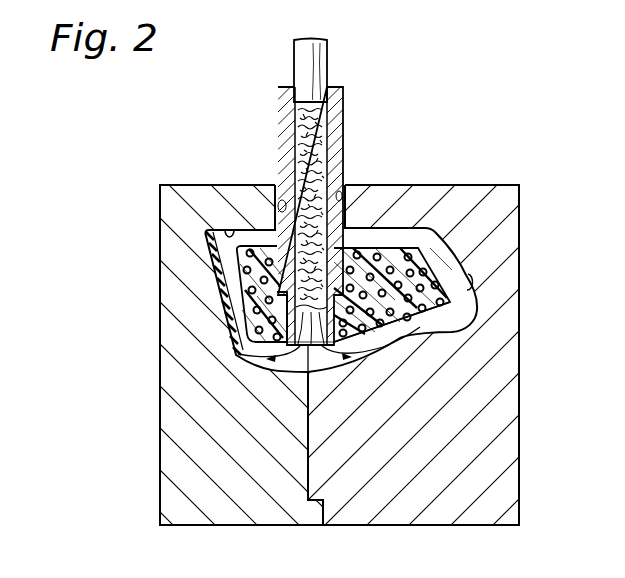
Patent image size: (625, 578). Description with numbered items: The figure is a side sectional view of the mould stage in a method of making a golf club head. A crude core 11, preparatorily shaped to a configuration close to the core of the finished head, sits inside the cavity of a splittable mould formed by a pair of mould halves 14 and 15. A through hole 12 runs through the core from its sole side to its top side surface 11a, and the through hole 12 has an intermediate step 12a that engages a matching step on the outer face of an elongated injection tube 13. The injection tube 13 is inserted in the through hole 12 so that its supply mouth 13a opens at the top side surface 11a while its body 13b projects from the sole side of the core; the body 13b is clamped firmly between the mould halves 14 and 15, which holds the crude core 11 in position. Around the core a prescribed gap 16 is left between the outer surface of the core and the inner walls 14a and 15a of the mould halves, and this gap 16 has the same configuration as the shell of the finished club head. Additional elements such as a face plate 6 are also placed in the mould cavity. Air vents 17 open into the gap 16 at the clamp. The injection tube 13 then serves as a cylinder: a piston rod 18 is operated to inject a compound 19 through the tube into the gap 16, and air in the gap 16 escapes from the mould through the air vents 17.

The face plate 6 is at (243, 280).
The crude core 11 is at (449, 212).
The top side surface 11a is at (437, 333).
The through hole 12 is at (385, 228).
The intermediate step 12a is at (214, 272).
The injection tube 13 is at (278, 115).
The supply mouth 13a is at (232, 321).
The body 13b is at (247, 226).
The mould half 14 is at (423, 515).
The inner wall 14a is at (472, 280).
The mould half 15 is at (233, 513).
The inner wall 15a is at (205, 228).
The gap 16 is at (237, 357).
The air vent 17 is at (278, 182).
The piston rod 18 is at (294, 68).
The compound 19 is at (320, 130).